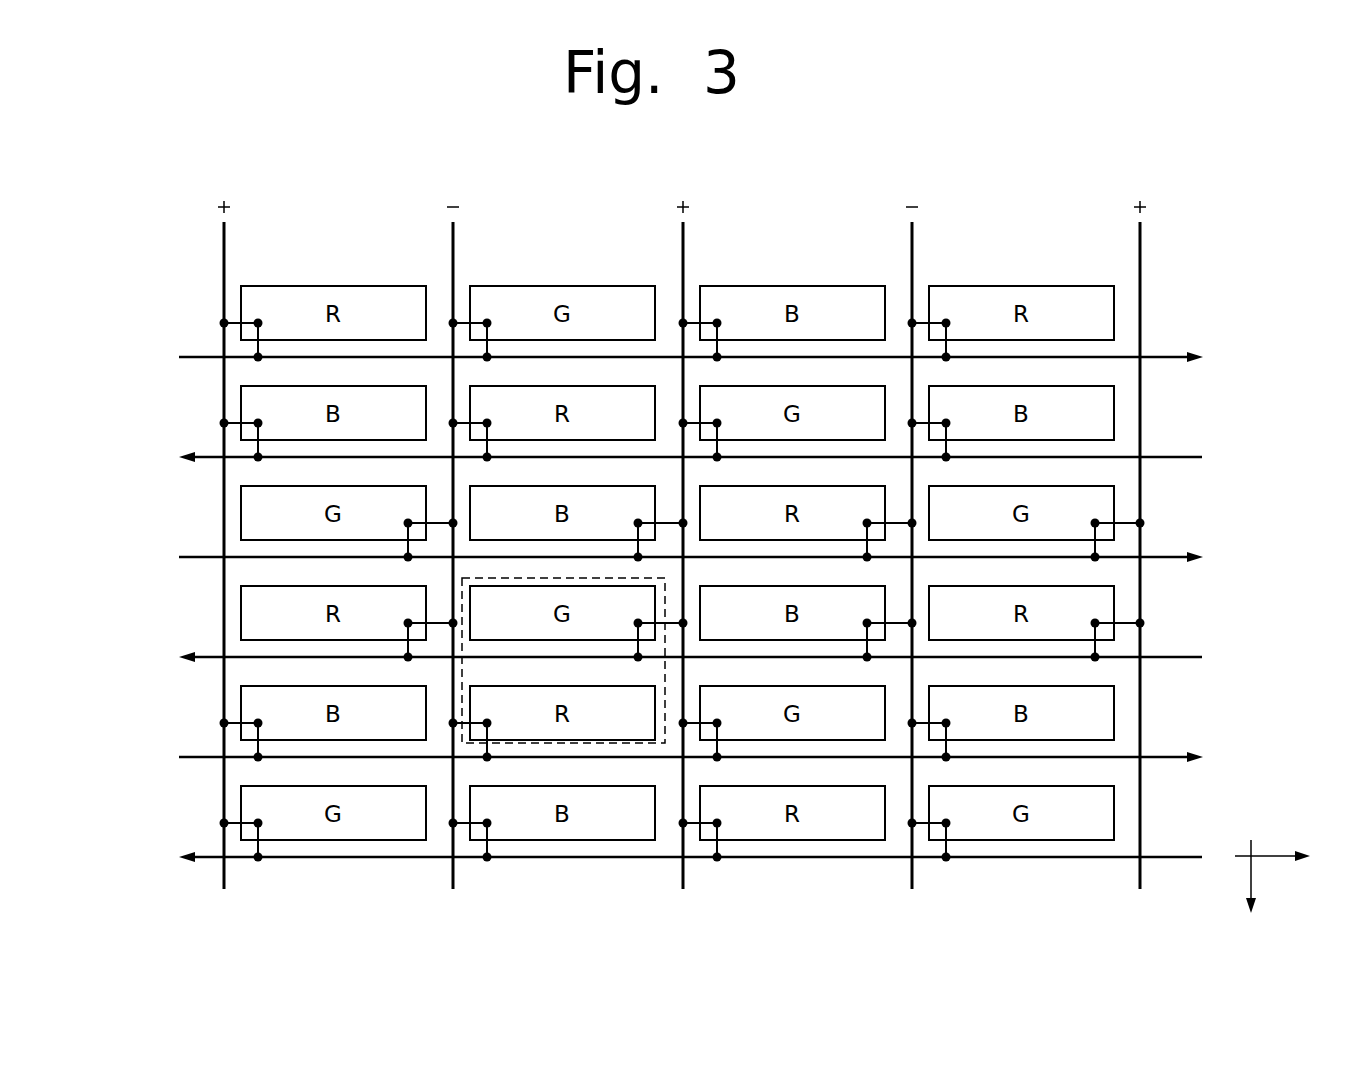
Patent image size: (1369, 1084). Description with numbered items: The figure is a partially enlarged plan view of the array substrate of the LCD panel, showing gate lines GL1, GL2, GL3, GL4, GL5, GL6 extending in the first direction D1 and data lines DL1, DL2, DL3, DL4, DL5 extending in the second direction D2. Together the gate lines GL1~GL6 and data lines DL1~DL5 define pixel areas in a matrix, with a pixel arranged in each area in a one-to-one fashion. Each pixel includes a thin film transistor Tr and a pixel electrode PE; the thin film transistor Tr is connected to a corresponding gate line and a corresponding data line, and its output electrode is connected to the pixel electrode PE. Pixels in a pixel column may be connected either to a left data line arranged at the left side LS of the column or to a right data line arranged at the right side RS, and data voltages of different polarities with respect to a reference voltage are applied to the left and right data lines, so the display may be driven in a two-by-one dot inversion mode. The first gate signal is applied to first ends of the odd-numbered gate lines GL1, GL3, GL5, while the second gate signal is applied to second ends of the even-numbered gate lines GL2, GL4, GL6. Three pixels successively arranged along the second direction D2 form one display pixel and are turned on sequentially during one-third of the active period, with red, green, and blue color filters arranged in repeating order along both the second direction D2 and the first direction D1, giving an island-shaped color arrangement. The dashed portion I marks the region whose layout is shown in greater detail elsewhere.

The data line DL1 is at (226, 250).
The data line DL2 is at (455, 250).
The data line DL3 is at (685, 250).
The data line DL4 is at (914, 250).
The data line DL5 is at (1142, 250).
The gate line GL1 is at (205, 353).
The gate line GL2 is at (205, 453).
The gate line GL3 is at (205, 553).
The gate line GL4 is at (205, 653).
The gate line GL5 is at (205, 753).
The gate line GL6 is at (205, 853).
The thin film transistor Tr is at (262, 840).
The pixel electrode PE is at (367, 840).
The portion I is at (612, 745).
The left side LS is at (72, 614).
The right side RS is at (1303, 614).
The first direction D1 is at (1291, 857).
The second direction D2 is at (1251, 893).